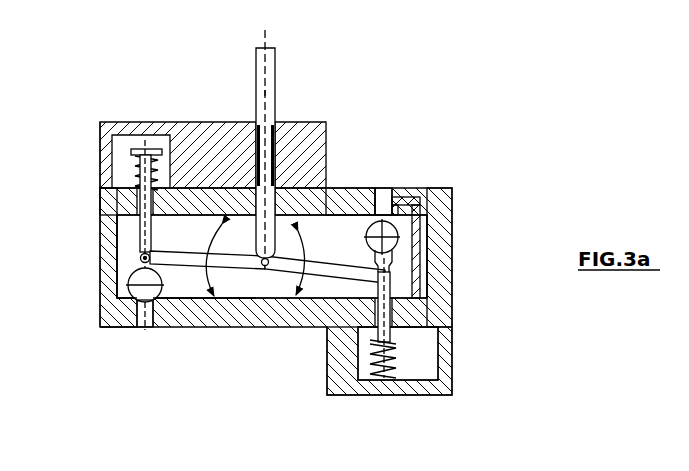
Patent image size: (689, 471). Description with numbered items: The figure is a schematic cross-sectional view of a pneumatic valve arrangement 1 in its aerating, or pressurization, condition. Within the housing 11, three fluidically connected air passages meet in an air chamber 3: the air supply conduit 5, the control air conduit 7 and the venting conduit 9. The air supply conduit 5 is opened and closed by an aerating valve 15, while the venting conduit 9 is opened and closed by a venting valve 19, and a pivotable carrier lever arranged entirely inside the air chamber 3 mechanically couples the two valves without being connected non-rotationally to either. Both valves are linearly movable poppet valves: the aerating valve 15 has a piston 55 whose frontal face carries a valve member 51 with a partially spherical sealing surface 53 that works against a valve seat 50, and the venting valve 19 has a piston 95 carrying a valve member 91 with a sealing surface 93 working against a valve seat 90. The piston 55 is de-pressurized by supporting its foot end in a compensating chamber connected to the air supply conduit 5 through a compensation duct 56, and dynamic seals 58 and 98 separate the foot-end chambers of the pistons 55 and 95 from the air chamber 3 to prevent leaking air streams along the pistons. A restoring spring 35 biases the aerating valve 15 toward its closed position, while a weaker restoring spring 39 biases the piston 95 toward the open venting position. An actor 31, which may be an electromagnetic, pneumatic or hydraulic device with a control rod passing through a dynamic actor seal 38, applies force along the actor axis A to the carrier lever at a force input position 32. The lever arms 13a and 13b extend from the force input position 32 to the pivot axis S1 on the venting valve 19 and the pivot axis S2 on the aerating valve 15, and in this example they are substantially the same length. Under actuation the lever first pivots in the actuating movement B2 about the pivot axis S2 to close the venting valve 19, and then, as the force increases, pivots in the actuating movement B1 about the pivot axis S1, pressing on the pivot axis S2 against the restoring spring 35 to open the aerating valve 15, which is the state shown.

The pneumatic valve arrangement 1 is at (240, 418).
The air chamber 3 is at (245, 249).
The air supply conduit 5 is at (382, 207).
The control air conduit 7 is at (105, 252).
The venting conduit 9 is at (148, 330).
The housing 11 is at (452, 310).
The lever arm 13a is at (228, 268).
The lever arm 13b is at (332, 272).
The aerating valve 15 is at (362, 208).
The venting valve 19 is at (178, 300).
The actor 31 is at (302, 73).
The force input position 32 is at (268, 266).
The restoring spring 35 is at (383, 385).
The dynamic actor seal 38 is at (328, 128).
The restoring spring 39 is at (170, 138).
The valve seat 50 is at (412, 214).
The valve member 51 is at (398, 237).
The sealing surface 53 is at (430, 199).
The piston 55 is at (395, 360).
The compensation duct 56 is at (420, 252).
The dynamic seal 58 is at (395, 345).
The valve seat 90 is at (130, 330).
The valve member 91 is at (128, 303).
The sealing surface 93 is at (108, 318).
The piston 95 is at (138, 193).
The dynamic seal 98 is at (118, 205).
The actor axis A is at (268, 93).
The actuating movement B1 is at (302, 232).
The actuating movement B2 is at (206, 232).
The pivot axis S1 is at (138, 262).
The pivot axis S2 is at (390, 278).